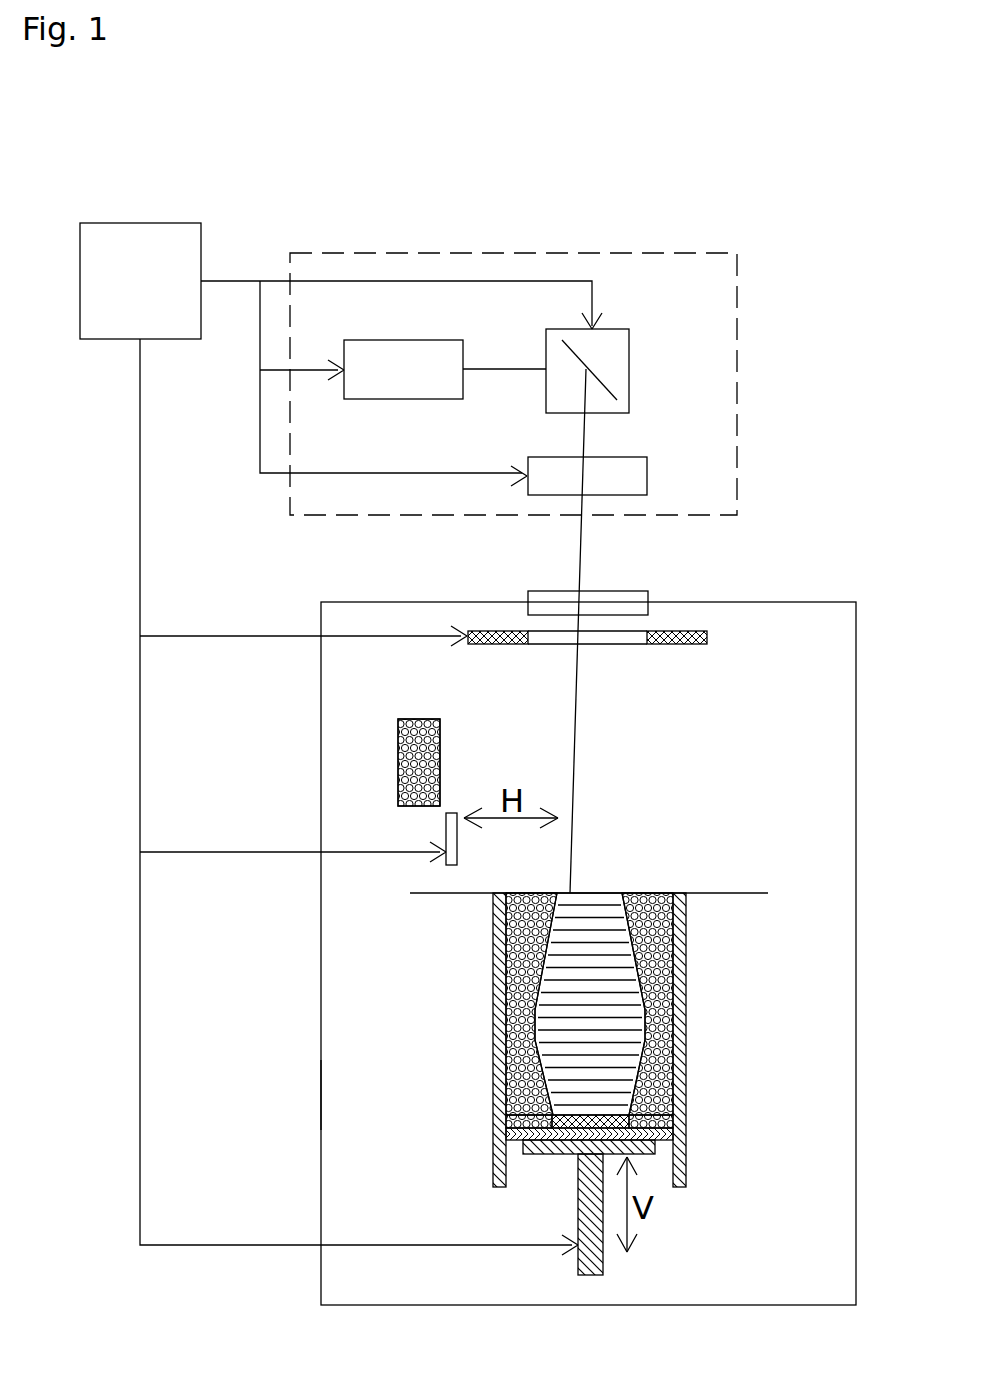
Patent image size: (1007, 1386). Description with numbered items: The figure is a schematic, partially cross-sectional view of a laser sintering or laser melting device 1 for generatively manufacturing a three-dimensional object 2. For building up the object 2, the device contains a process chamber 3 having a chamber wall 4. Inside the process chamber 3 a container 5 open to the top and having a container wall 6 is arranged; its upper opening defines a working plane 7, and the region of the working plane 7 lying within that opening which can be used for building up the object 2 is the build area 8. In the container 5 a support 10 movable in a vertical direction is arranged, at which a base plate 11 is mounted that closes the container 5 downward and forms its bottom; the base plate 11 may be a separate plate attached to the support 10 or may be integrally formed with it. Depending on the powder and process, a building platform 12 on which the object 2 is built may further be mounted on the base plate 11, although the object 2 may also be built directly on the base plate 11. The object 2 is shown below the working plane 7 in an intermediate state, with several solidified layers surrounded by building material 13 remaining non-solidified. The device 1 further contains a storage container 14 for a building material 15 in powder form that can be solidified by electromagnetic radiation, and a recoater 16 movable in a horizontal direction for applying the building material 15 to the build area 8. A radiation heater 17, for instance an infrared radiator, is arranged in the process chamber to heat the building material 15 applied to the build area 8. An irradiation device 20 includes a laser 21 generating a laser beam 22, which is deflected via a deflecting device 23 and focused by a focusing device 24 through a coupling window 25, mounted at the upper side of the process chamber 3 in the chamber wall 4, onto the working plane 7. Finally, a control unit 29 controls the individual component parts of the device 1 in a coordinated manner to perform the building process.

The laser sintering or laser melting device 1 is at (823, 253).
The object 2 is at (608, 953).
The process chamber 3 is at (773, 638).
The chamber wall 4 is at (321, 1095).
The container 5 is at (686, 1098).
The container wall 6 is at (685, 1040).
The working plane 7 is at (738, 893).
The build area 8 is at (648, 893).
The support 10 is at (568, 1145).
The base plate 11 is at (523, 1142).
The building platform 12 is at (495, 1122).
The building material remaining non-solidified 13 is at (495, 940).
The storage container 14 is at (417, 718).
The building material 15 is at (440, 760).
The recoater 16 is at (452, 835).
The radiation heater 17 is at (480, 632).
The irradiation device 20 is at (737, 365).
The laser 21 is at (400, 399).
The laser beam 22 is at (486, 369).
The deflecting device 23 is at (618, 341).
The focusing device 24 is at (617, 469).
The coupling window 25 is at (623, 603).
The control unit 29 is at (341, 739).